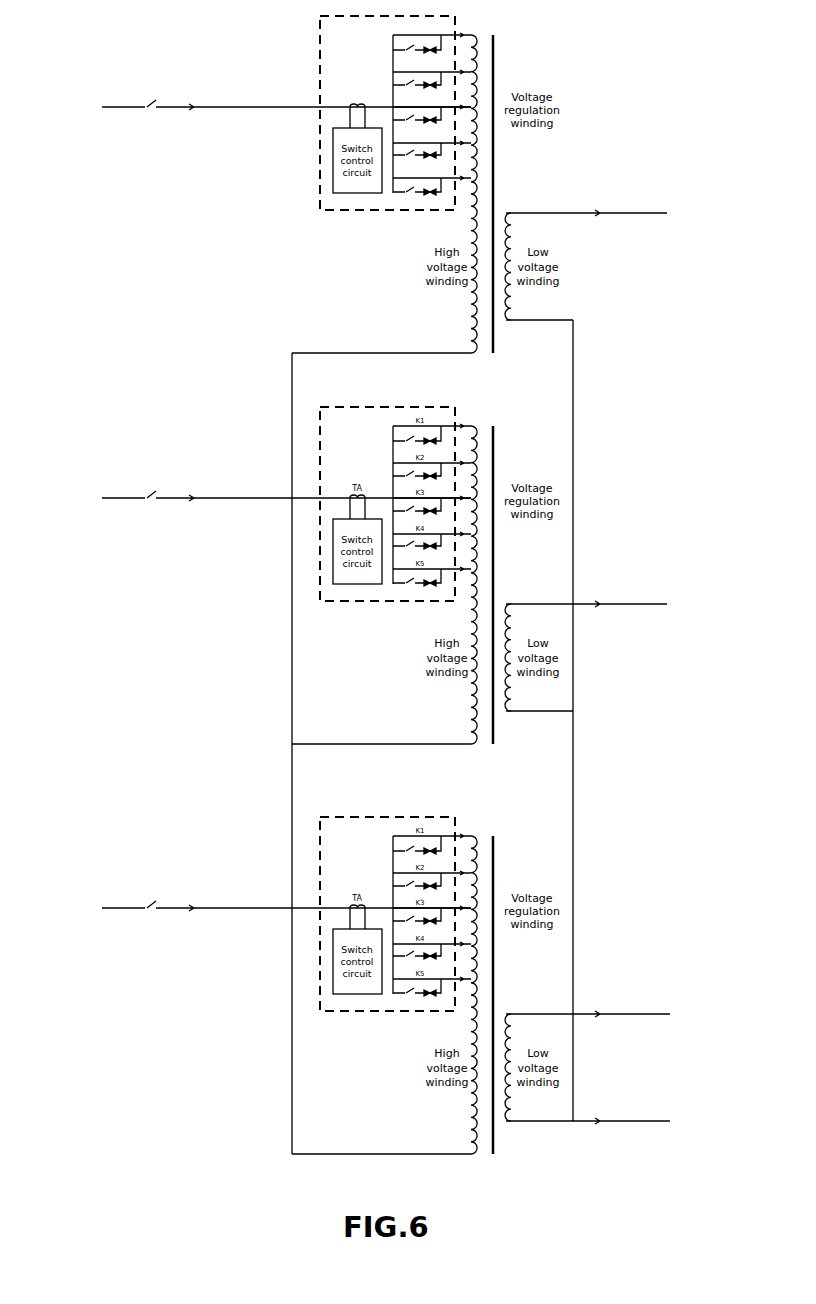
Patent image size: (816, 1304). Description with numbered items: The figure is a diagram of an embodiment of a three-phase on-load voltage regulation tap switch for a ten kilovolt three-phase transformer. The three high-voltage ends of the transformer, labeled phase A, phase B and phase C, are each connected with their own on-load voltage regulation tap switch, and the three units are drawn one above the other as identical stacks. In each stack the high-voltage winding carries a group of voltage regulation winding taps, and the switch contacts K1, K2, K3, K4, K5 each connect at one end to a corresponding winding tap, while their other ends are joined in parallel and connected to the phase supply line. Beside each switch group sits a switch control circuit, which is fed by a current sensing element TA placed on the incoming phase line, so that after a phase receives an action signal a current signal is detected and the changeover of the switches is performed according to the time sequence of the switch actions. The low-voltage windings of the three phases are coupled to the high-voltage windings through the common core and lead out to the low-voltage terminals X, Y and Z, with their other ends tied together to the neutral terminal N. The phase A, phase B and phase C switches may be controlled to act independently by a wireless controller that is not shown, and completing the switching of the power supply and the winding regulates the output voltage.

The phase A is at (265, 108).
The phase B is at (265, 499).
The phase C is at (265, 909).
The low voltage output terminal X is at (641, 213).
The low voltage output terminal Y is at (640, 605).
The low voltage output terminal Z is at (641, 1015).
The neutral terminal N is at (642, 1122).
The current transformer TA is at (357, 110).
The tap switch K1 is at (432, 39).
The tap switch K2 is at (432, 75).
The tap switch K3 is at (432, 110).
The tap switch K4 is at (432, 146).
The tap switch K5 is at (432, 182).